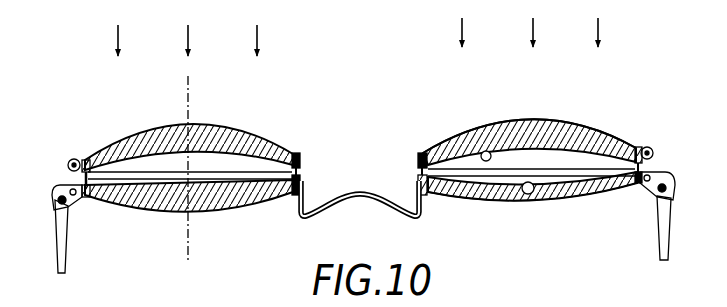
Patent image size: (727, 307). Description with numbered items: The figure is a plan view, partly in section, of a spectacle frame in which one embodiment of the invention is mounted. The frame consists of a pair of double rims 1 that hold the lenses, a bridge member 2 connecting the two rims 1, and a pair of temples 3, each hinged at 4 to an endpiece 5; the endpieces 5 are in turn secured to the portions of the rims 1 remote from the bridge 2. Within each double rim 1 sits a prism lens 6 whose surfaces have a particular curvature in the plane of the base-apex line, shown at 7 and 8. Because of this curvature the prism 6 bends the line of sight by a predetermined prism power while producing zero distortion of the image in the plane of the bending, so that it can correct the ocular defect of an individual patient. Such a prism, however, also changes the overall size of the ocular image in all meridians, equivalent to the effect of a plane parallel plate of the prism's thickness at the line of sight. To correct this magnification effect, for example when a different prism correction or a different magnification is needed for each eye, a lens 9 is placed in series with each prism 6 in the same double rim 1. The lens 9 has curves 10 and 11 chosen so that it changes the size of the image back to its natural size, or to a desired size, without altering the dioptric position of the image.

The double rims 1 is at (85, 160).
The bridge member 2 is at (357, 207).
The temples 3 is at (58, 262).
The hinge 4 is at (56, 204).
The endpieces 5 is at (66, 193).
The prism lens 6 is at (569, 132).
The curvature of prism 7 is at (517, 120).
The curvature of prism 8 is at (485, 150).
The lens 9 is at (495, 200).
The curve of lens 10 is at (541, 203).
The curve of lens 11 is at (160, 76).